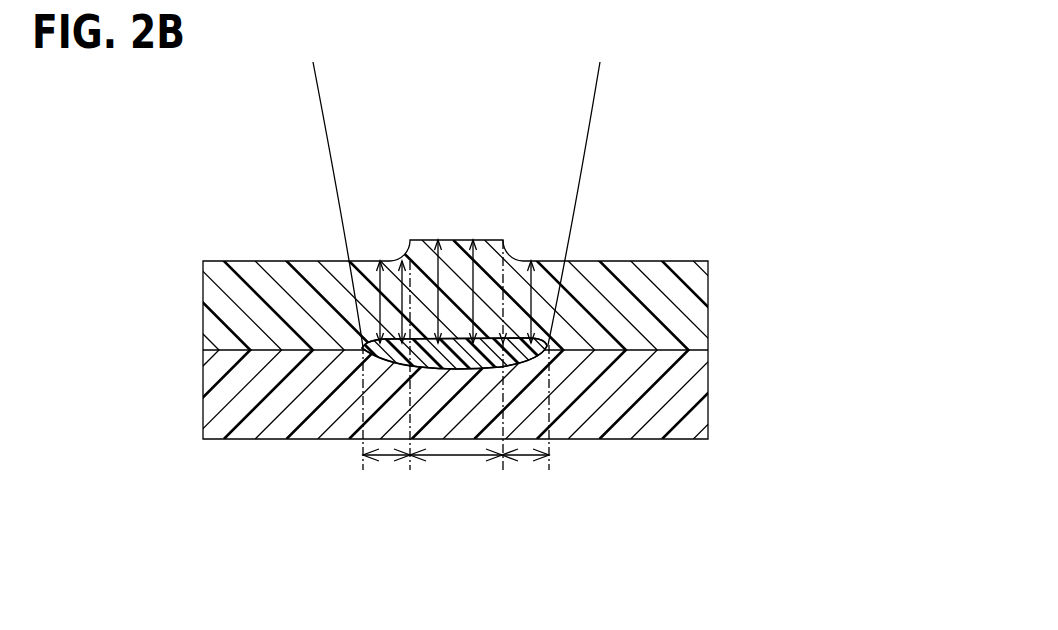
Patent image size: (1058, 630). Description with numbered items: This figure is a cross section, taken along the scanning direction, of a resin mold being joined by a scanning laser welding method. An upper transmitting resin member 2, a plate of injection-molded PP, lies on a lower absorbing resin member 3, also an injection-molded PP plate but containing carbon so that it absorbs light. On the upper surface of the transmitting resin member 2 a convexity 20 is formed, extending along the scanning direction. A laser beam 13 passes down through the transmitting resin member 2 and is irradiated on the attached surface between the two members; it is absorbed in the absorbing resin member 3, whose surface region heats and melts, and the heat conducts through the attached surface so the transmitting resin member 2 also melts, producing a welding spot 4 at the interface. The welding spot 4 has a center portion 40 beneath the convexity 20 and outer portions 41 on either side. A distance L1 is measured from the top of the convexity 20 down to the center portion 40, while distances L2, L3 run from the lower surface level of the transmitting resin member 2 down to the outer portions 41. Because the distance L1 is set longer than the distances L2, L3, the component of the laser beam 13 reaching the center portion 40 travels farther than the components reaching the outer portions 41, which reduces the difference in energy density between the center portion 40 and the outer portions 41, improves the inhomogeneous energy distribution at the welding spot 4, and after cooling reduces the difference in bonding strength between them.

The transmitting resin member 2 is at (202, 305).
The absorbing resin member 3 is at (202, 395).
The welding spot 4 is at (548, 340).
The laser beam 13 is at (330, 163).
The convexity 20 is at (488, 240).
The center portion 40 is at (456, 476).
The outer portion 41 is at (456, 476).
The distance L1 is at (471, 290).
The distance L2 is at (380, 307).
The distance L3 is at (384, 300).